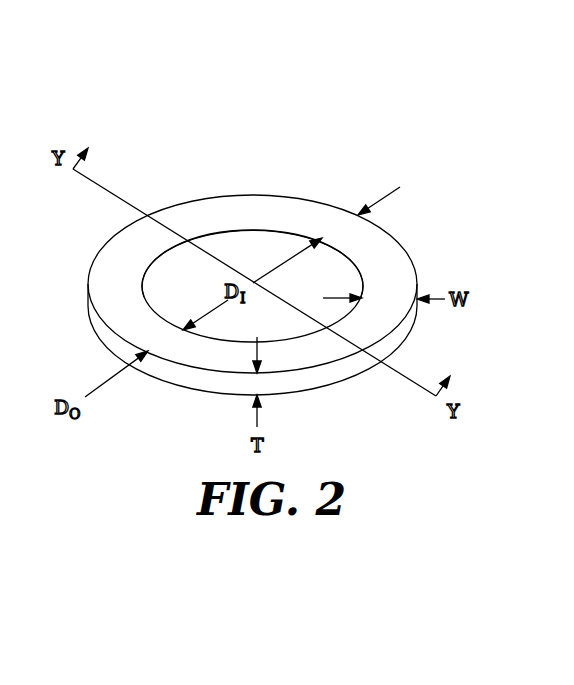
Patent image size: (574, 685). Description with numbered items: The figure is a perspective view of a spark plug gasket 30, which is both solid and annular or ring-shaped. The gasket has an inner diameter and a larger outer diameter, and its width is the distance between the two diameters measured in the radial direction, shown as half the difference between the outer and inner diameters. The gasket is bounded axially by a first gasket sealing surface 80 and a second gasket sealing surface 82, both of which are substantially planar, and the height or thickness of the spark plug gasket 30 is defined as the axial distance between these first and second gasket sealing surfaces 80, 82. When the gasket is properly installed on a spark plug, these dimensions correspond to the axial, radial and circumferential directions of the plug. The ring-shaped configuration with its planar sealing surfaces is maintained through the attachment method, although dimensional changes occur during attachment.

The spark plug gasket 30 is at (219, 277).
The first gasket sealing surface 80 is at (117, 262).
The second gasket sealing surface 82 is at (184, 388).